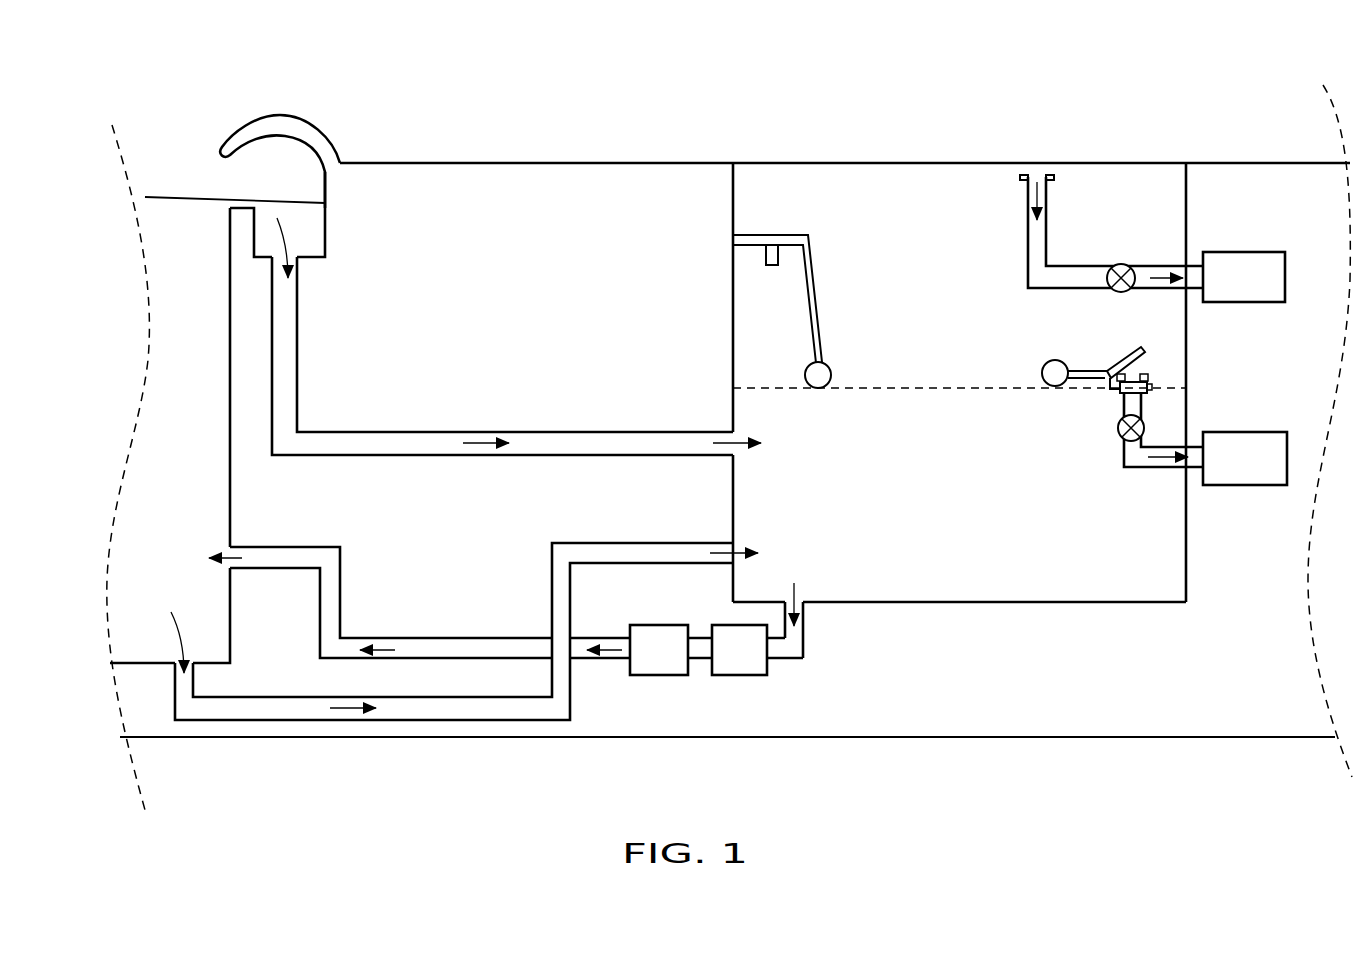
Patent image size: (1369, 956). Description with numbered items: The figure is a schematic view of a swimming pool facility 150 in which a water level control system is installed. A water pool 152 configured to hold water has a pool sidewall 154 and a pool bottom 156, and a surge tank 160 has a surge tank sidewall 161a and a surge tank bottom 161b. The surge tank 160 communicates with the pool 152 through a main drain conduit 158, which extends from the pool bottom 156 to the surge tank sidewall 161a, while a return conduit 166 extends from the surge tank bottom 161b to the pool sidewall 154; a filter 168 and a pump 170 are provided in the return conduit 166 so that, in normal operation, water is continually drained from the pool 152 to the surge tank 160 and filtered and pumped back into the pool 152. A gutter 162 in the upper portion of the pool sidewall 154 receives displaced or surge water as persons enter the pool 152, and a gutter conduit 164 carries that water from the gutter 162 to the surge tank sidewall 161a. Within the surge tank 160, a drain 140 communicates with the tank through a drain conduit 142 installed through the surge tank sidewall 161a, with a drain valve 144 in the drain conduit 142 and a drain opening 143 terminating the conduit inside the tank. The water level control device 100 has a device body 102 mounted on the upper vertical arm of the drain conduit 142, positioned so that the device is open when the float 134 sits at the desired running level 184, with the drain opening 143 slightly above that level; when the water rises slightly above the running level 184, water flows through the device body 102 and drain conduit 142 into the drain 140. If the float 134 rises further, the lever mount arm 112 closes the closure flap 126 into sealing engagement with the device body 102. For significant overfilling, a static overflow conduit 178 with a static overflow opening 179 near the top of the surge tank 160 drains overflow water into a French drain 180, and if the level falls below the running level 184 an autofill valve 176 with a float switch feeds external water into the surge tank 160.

The swimming pool facility 150 is at (183, 72).
The water pool 152 is at (185, 187).
The pool sidewall 154 is at (230, 322).
The pool bottom 156 is at (122, 663).
The main drain conduit 158 is at (290, 708).
The surge tank 160 is at (959, 356).
The surge tank sidewall 161a is at (735, 487).
The surge tank bottom 161b is at (972, 602).
The gutter 162 is at (320, 220).
The gutter conduit 164 is at (297, 393).
The return conduit 166 is at (790, 660).
The filter 168 is at (737, 663).
The pump 170 is at (657, 663).
The autofill valve 176 is at (813, 290).
The static overflow conduit 178 is at (1028, 233).
The static overflow opening 179 is at (1043, 163).
The French drain 180 is at (1247, 252).
The running level 184 is at (763, 388).
The water level control device 100 is at (1107, 379).
The device body 102 is at (1143, 395).
The lever mount arm 112 is at (1104, 394).
The closure flap 126 is at (1140, 350).
The float 134 is at (1042, 373).
The drain 140 is at (1250, 485).
The drain conduit 142 is at (1160, 468).
The drain opening 143 is at (1136, 372).
The drain valve 144 is at (1118, 422).